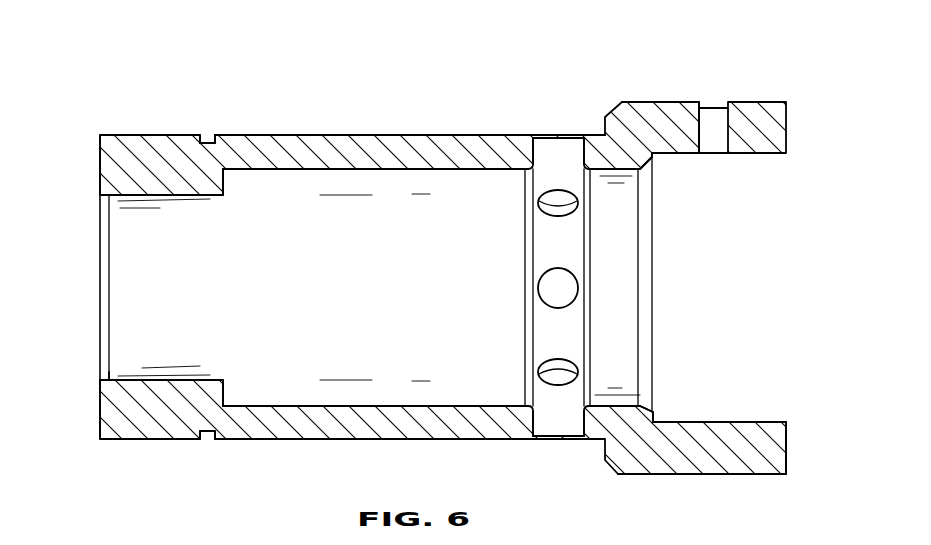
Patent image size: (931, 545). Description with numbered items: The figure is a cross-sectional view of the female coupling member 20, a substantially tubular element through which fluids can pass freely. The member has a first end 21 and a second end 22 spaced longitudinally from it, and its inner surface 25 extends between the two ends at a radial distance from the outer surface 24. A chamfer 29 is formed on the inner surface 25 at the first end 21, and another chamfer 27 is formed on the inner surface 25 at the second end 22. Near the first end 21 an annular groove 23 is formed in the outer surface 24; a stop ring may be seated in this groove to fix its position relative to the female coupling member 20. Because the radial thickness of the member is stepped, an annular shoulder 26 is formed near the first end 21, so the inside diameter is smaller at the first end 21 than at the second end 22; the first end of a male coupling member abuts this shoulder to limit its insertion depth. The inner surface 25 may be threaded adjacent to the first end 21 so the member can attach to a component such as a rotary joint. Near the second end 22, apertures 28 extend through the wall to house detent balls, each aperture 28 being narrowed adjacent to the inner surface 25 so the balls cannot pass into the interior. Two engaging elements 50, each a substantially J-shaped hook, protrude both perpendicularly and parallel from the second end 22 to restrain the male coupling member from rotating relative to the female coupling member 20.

The female coupling member 20 is at (770, 52).
The first end 21 is at (98, 288).
The second end 22 is at (654, 347).
The annular groove 23 is at (208, 134).
The outer surface 24 is at (386, 135).
The inner surface 25 is at (158, 196).
The annular shoulder 26 is at (229, 186).
The chamfer 27 is at (645, 160).
The aperture 28 is at (546, 198).
The chamfer 29 is at (103, 384).
The engaging element 50 is at (777, 130).